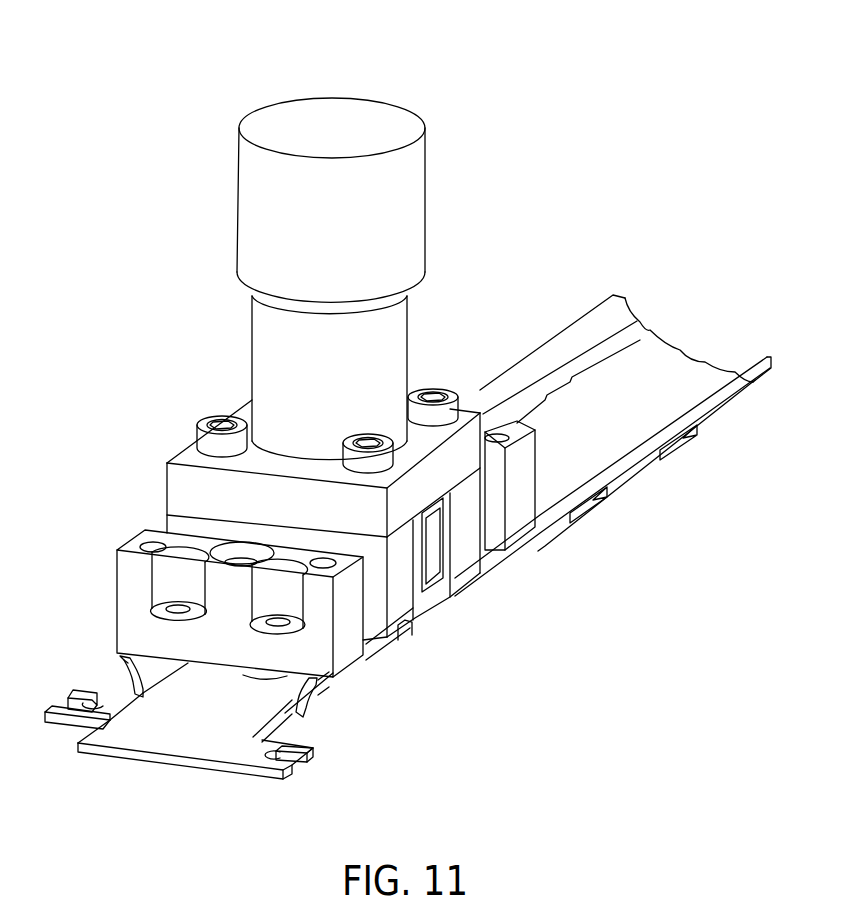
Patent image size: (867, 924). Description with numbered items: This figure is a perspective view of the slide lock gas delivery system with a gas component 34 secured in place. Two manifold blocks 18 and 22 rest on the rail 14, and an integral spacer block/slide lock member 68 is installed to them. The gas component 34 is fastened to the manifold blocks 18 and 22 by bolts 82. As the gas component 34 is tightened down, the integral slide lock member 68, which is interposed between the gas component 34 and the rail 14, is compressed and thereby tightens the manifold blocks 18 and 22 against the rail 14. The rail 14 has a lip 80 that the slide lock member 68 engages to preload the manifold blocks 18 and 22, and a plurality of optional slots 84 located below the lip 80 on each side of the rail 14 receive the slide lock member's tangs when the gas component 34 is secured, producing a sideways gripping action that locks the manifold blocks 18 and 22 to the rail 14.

The rail 14 is at (680, 368).
The manifold block 18 is at (518, 515).
The second manifold block 22 is at (127, 540).
The gas component 34 is at (370, 127).
The integral spacer block/slide lock member 68 is at (435, 602).
The lip 80 is at (315, 700).
The bolts 82 is at (215, 417).
The slots 84 is at (335, 688).